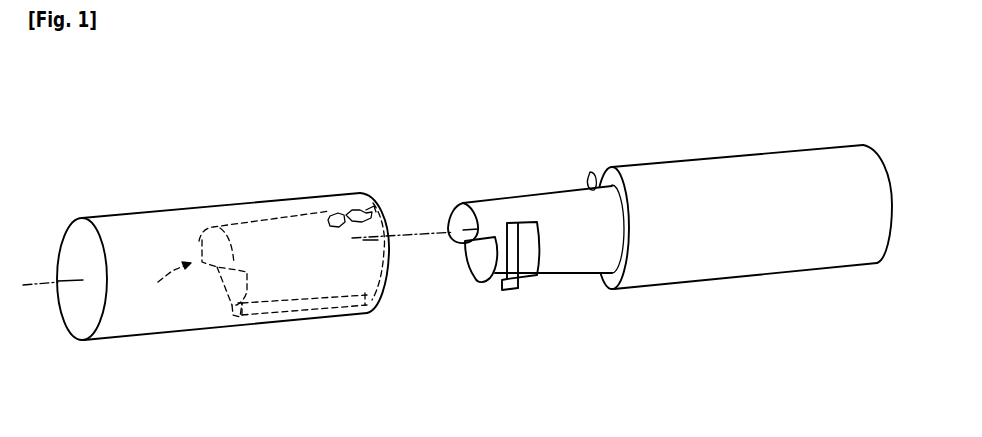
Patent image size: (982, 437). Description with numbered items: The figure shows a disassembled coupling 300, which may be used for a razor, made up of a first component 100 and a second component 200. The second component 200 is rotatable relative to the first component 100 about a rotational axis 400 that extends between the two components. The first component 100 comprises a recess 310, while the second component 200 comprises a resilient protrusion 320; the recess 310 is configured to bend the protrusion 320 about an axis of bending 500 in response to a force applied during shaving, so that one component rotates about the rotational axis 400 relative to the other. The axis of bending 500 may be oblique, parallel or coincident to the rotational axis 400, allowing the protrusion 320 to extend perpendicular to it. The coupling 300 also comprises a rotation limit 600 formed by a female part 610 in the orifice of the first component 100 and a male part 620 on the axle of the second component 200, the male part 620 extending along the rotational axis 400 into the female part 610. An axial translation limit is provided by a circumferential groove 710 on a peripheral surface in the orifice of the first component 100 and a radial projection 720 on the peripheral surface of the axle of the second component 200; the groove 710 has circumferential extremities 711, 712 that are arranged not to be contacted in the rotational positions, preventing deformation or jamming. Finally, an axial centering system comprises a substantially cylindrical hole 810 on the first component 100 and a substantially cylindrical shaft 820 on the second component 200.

The first component 100 is at (118, 229).
The second component 200 is at (731, 172).
The coupling 300 is at (397, 330).
The recess 310 is at (294, 308).
The resilient protrusion 320 is at (514, 289).
The rotational axis 400 is at (37, 287).
The axis of bending 500 is at (407, 231).
The rotation limit 600 is at (167, 287).
The female part 610 is at (208, 242).
The male part 620 is at (458, 219).
The circumferential groove 710 is at (346, 203).
The circumferential extremity of the groove 711 is at (378, 205).
The circumferential extremity of the groove 712 is at (315, 214).
The radial projection 720 is at (591, 172).
The hole 810 is at (386, 269).
The shaft 820 is at (551, 265).